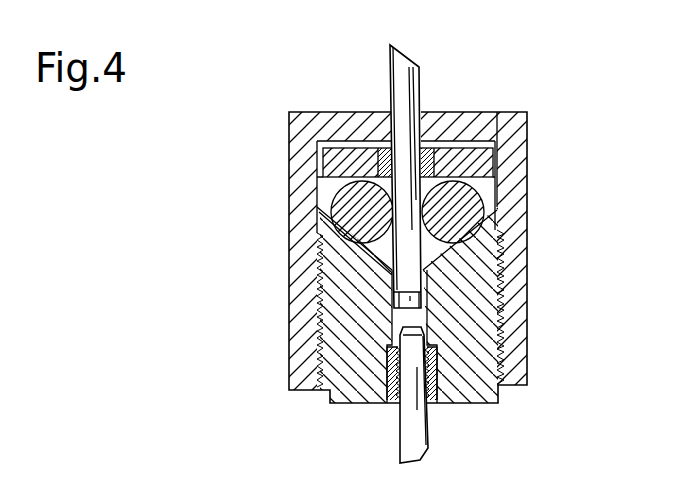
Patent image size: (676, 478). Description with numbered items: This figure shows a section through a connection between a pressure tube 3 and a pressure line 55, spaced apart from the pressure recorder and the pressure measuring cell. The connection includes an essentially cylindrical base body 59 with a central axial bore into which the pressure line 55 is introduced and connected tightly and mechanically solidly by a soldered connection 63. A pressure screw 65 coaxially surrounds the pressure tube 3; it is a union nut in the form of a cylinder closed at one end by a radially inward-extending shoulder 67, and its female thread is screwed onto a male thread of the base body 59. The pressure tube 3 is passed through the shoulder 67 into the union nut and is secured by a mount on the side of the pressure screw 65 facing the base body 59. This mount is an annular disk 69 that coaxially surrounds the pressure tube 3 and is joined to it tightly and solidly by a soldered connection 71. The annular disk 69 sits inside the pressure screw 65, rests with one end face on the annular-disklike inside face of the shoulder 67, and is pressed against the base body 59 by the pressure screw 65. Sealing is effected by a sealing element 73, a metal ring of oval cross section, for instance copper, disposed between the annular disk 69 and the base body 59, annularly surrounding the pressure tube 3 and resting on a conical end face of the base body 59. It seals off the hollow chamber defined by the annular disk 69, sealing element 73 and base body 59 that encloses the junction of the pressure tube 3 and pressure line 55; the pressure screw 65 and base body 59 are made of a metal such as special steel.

The pressure tube 3 is at (400, 78).
The pressure line 55 is at (398, 449).
The base body 59 is at (318, 305).
The soldered connection 63 is at (448, 400).
The pressure screw 65 is at (290, 207).
The shoulder 67 is at (497, 135).
The annular disk 69 is at (480, 153).
The soldered connection 71 is at (367, 143).
The sealing element 73 is at (483, 233).